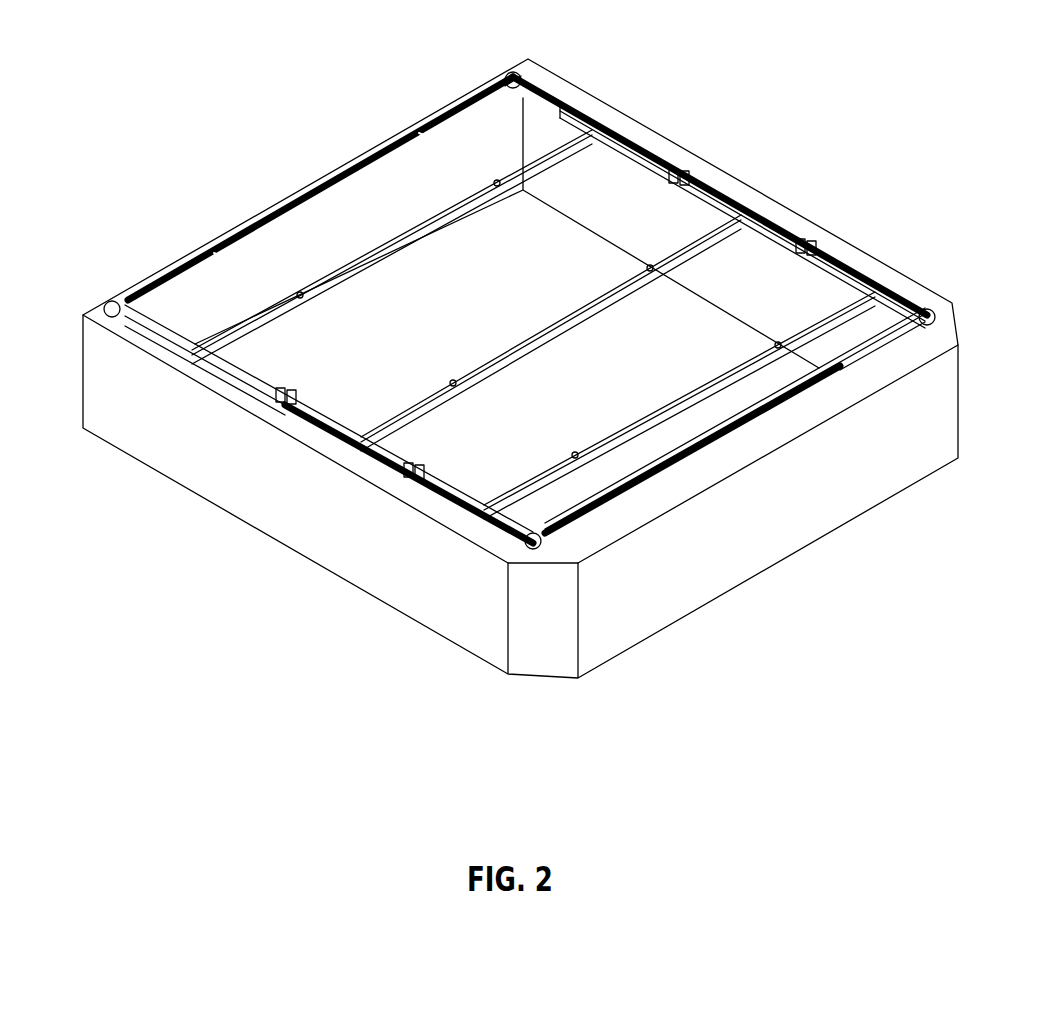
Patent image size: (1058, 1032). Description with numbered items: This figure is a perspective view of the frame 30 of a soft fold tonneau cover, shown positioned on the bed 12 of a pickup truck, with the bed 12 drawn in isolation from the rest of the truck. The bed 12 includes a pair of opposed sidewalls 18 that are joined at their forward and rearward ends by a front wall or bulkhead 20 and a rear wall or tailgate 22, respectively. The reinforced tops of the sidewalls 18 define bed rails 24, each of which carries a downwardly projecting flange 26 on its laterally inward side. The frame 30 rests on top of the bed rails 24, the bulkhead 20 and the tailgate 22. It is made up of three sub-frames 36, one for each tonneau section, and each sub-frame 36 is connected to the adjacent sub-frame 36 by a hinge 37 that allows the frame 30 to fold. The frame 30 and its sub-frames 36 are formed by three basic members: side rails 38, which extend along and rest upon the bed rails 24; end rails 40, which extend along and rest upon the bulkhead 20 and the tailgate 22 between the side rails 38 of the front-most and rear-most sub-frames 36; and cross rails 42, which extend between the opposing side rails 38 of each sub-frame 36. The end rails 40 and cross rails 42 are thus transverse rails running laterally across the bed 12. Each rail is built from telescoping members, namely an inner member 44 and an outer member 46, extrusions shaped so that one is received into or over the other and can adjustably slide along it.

The bed 12 is at (262, 700).
The sidewalls 18 is at (745, 190).
The front wall/bulkhead 20 is at (501, 351).
The rear wall/tailgate 22 is at (858, 452).
The bed rails 24 is at (725, 176).
The downwardly projecting flange 26 is at (533, 108).
The frame 30 is at (628, 118).
The sub-frames 36 is at (557, 102).
The hinge 37 is at (680, 175).
The side rails 38 is at (157, 330).
The end rails 40 is at (363, 150).
The cross rails 42 is at (432, 228).
The inner member 44 is at (510, 76).
The outer member 46 is at (312, 190).